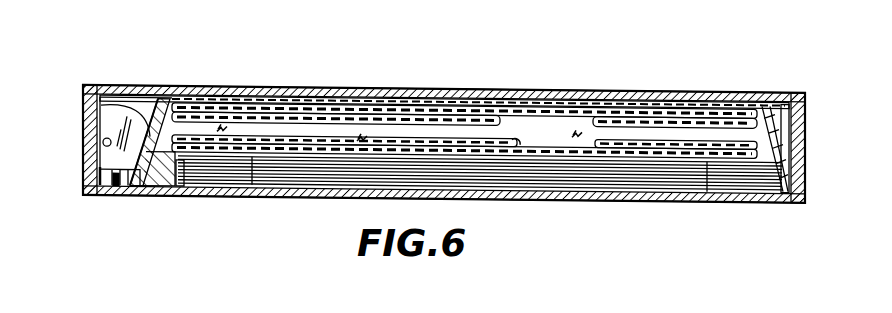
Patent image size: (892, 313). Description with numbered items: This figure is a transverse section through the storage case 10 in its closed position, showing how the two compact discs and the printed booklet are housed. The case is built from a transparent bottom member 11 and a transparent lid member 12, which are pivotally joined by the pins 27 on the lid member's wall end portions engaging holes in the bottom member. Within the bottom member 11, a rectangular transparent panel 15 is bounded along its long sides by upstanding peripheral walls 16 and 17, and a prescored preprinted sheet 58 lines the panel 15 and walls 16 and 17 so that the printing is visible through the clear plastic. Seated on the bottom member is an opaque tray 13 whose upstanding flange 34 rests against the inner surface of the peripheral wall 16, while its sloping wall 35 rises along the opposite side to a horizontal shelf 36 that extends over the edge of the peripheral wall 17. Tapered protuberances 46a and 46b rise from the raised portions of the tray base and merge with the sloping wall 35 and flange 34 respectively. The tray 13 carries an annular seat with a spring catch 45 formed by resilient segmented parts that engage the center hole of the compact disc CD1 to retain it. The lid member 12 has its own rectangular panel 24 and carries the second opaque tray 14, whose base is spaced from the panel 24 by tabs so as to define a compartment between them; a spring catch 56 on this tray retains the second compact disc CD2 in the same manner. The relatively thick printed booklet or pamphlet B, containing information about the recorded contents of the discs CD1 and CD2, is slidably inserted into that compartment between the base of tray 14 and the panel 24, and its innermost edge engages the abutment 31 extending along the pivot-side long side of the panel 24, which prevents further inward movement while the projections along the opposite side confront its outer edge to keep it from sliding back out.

The storage case 10 is at (643, 79).
The bottom member 11 is at (382, 87).
The lid member 12 is at (586, 202).
The tray 13 is at (143, 188).
The tray 14 is at (707, 196).
The panel 15 is at (467, 94).
The peripheral wall 16 is at (797, 160).
The peripheral wall 17 is at (97, 137).
The panel 24 is at (636, 200).
The pins 27 is at (97, 179).
The abutment 31 is at (172, 190).
The upstanding flange 34 is at (798, 175).
The sloping wall 35 is at (140, 130).
The horizontal shelf 36 is at (114, 188).
The spring catch 45 is at (424, 100).
The tapered protuberance 46a is at (189, 127).
The tapered protuberance 46b is at (851, 128).
The spring catch 56 is at (520, 142).
The preprinted sheet 58 is at (97, 113).
The booklet or pamphlet B is at (560, 198).
The compact disc CD1 is at (552, 98).
The compact disc CD2 is at (362, 136).